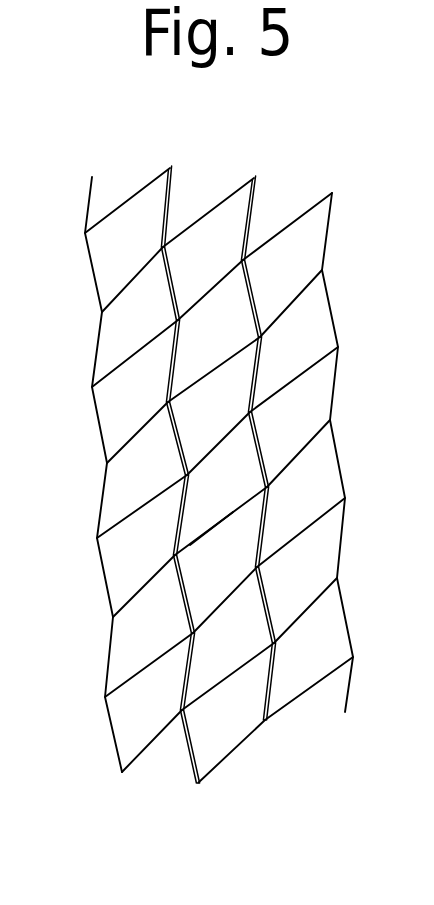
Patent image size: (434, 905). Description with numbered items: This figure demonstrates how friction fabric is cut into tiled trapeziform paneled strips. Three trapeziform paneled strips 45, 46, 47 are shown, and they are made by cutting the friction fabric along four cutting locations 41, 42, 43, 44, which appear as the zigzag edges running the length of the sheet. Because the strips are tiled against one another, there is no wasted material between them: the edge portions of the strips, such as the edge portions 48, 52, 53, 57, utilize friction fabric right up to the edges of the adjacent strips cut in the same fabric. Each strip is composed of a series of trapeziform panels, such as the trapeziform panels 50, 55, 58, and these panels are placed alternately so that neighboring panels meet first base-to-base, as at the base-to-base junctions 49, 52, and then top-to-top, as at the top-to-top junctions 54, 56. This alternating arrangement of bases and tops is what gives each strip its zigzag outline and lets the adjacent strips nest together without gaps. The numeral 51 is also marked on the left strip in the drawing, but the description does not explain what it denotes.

The cutting location 41 is at (93, 171).
The cutting location 42 is at (175, 162).
The cutting location 43 is at (263, 162).
The cutting location 44 is at (335, 188).
The trapeziform paneled strip 45 is at (153, 753).
The trapeziform paneled strip 46 is at (253, 743).
The trapeziform paneled strip 47 is at (312, 700).
The edge portion 48 is at (87, 253).
The base-to-base junction 49 is at (132, 357).
The trapeziform panel 50 is at (118, 493).
The fold 51 is at (107, 585).
The edge portion 52 is at (138, 672).
The edge portion 53 is at (328, 232).
The top-to-top junction 54 is at (296, 300).
The trapeziform panel 55 is at (323, 335).
The top-to-top junction 56 is at (305, 458).
The edge portion 57 is at (343, 540).
The trapeziform panel 58 is at (313, 565).